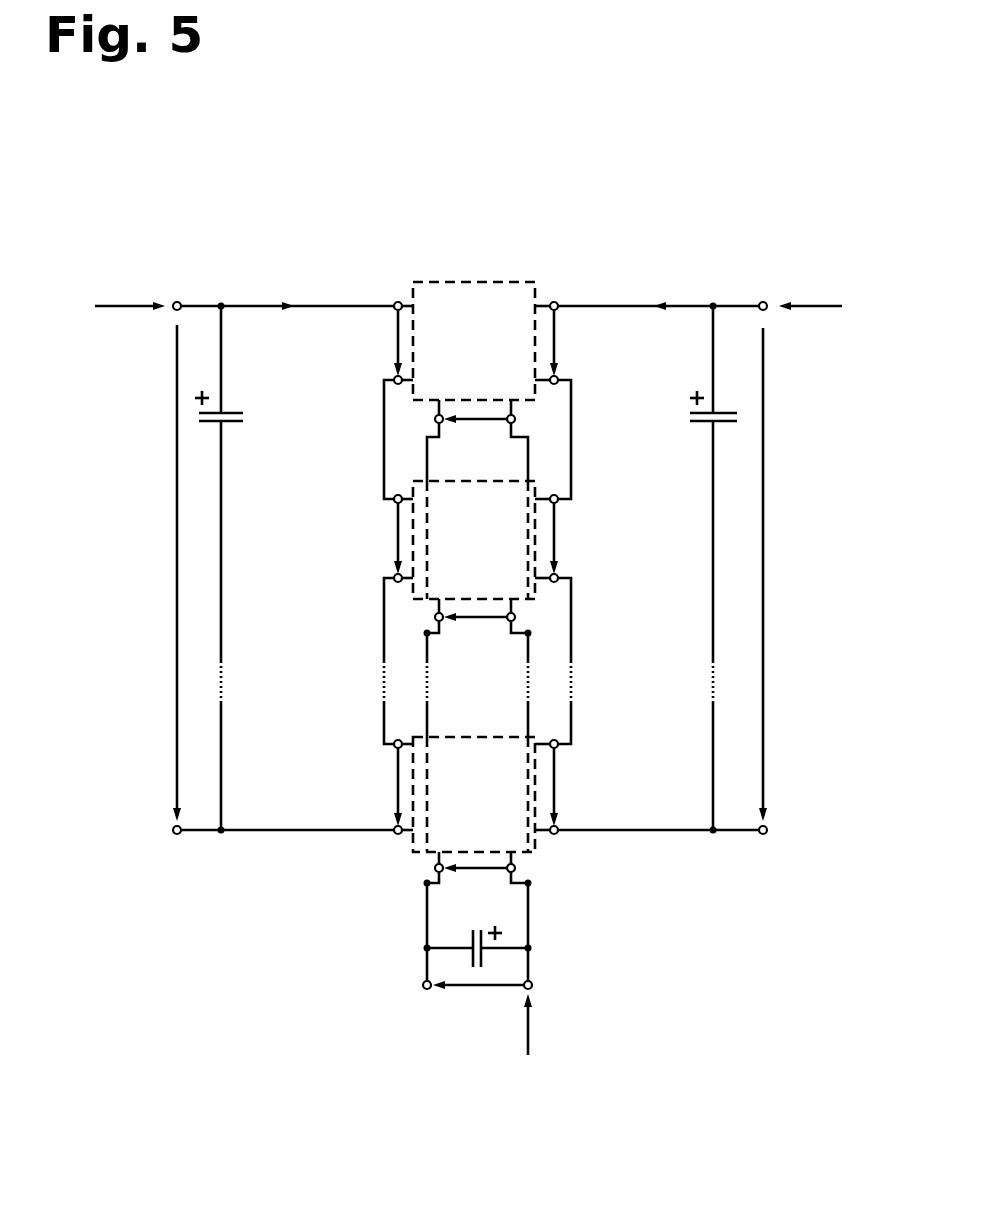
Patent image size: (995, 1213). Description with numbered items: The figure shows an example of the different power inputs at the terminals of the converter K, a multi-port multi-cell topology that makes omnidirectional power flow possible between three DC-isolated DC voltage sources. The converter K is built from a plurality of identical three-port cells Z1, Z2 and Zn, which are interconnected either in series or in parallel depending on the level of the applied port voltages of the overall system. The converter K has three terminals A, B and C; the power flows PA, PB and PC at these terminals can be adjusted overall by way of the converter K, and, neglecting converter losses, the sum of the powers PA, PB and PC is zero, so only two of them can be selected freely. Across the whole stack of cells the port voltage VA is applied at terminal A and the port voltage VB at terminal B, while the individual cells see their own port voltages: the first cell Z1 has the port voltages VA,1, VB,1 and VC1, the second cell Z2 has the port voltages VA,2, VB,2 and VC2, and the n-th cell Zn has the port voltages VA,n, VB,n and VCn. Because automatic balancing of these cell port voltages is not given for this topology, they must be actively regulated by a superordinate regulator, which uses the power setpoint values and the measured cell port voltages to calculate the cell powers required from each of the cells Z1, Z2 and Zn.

The converter K is at (322, 236).
The three-port cell Z1 is at (455, 281).
The three-port cell Z2 is at (506, 482).
The three-port cell Zn is at (506, 738).
The power at terminal A PA is at (125, 283).
The power at terminal B PB is at (814, 283).
The power at terminal C PC is at (550, 1037).
The port voltage at terminal A VA is at (154, 573).
The port voltage at terminal B VB is at (787, 574).
The port voltage of cell 1 at port A VA,1 is at (364, 343).
The port voltage of cell 1 at port B VB,1 is at (592, 343).
The port voltage of cell 1 at port C VC1 is at (477, 443).
The port voltage of cell 2 at port A VA,2 is at (364, 538).
The port voltage of cell 2 at port B VB,2 is at (592, 538).
The port voltage of cell 2 at port C VC2 is at (477, 642).
The port voltage of cell n at port A VA,n is at (364, 787).
The port voltage of cell n at port B VB,n is at (592, 787).
The port voltage of cell n at port C VCn is at (477, 893).